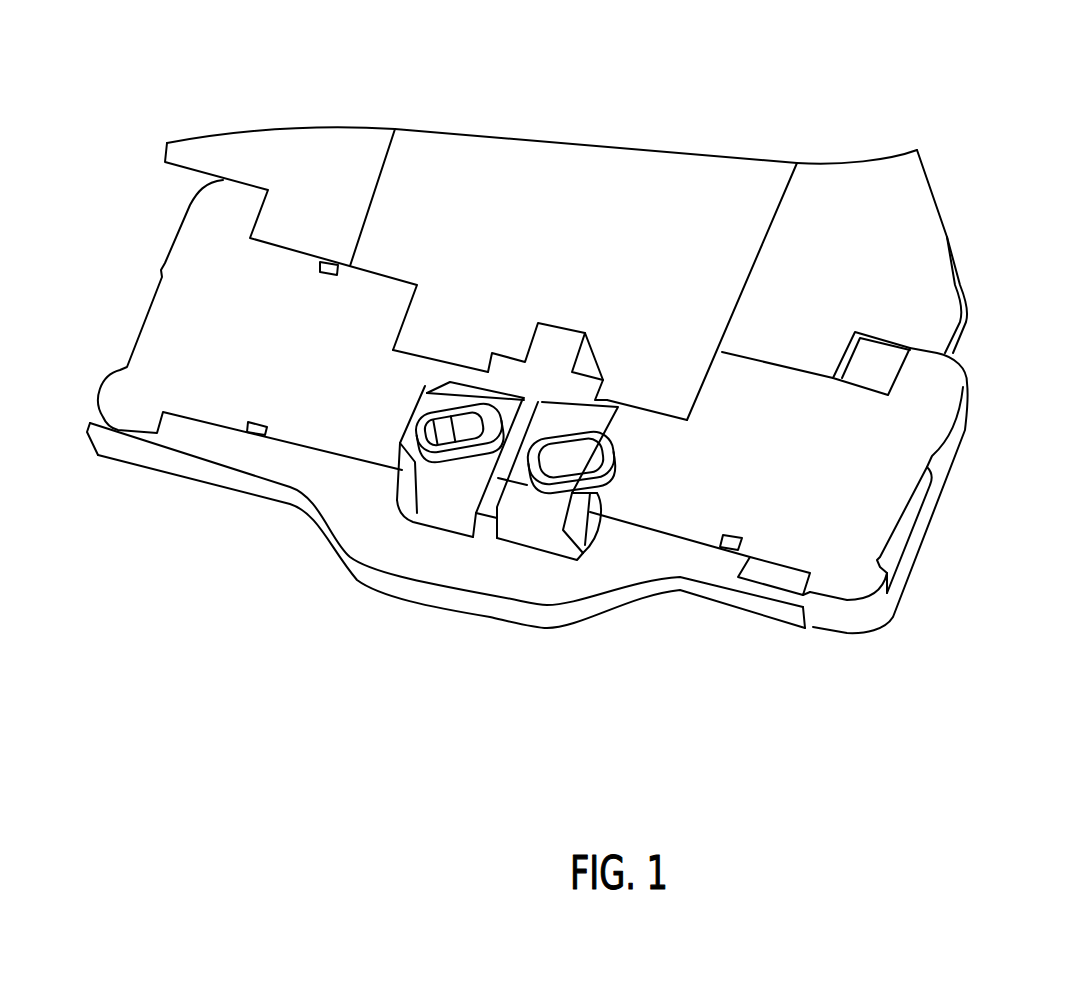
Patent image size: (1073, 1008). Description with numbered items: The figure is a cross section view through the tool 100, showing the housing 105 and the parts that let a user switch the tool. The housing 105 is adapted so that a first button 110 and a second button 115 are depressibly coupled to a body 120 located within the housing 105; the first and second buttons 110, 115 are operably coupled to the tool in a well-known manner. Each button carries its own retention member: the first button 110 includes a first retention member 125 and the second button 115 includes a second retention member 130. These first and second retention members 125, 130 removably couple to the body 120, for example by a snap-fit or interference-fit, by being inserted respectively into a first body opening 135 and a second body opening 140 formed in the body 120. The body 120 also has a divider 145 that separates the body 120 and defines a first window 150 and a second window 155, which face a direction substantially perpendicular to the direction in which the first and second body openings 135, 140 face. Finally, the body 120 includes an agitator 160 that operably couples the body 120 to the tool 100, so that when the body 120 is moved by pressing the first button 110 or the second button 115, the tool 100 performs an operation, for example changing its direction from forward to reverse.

The tool 100 is at (985, 112).
The housing 105 is at (938, 277).
The first button 110 is at (160, 333).
The second button 115 is at (957, 382).
The body 120 is at (388, 490).
The first retention member 125 is at (483, 407).
The second retention member 130 is at (573, 433).
The first body opening 135 is at (397, 452).
The second body opening 140 is at (565, 533).
The divider 145 is at (487, 528).
The first window 150 is at (445, 517).
The second window 155 is at (530, 532).
The agitator 160 is at (540, 343).